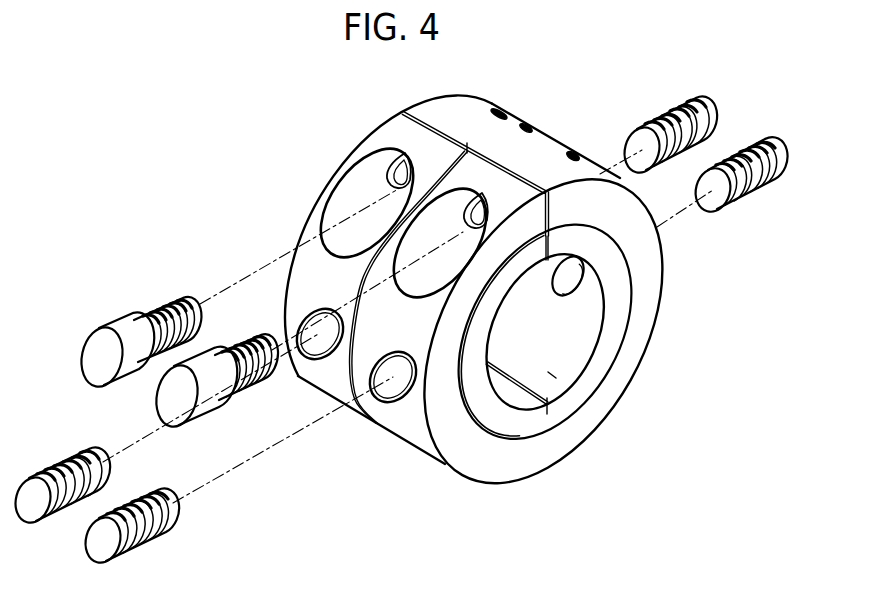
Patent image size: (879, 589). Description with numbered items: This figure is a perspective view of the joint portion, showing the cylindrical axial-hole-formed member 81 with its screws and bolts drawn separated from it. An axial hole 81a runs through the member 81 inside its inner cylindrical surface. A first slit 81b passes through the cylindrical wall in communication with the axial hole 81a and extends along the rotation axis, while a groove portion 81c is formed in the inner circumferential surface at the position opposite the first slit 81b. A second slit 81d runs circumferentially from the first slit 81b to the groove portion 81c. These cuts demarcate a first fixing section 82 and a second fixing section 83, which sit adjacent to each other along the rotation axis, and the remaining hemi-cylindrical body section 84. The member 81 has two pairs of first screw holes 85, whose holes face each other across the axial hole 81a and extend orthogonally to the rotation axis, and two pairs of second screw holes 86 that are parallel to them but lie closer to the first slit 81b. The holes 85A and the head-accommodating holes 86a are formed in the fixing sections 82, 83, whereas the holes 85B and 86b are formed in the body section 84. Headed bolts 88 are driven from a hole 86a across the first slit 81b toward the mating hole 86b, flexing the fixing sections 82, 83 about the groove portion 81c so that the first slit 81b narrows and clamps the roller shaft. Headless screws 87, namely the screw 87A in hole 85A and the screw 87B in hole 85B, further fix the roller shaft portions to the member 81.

The axial-hole-formed member 81 is at (188, 216).
The axial hole 81a is at (550, 373).
The first slit 81b is at (403, 113).
The groove portion 81c is at (553, 413).
The second slit 81d is at (360, 406).
The first fixing section 82 is at (437, 467).
The second fixing section 83 is at (331, 174).
The body section 84 is at (641, 367).
The first screw holes 85 is at (493, 336).
The first screw hole 85A is at (390, 370).
The first screw hole 85B is at (580, 287).
The second screw holes 86 is at (451, 197).
The screw hole 86a is at (364, 180).
The screw hole 86b is at (572, 152).
The headless screws 87 is at (399, 327).
The screw 87A is at (160, 492).
The screw 87B is at (736, 109).
The bolts 88 is at (162, 410).